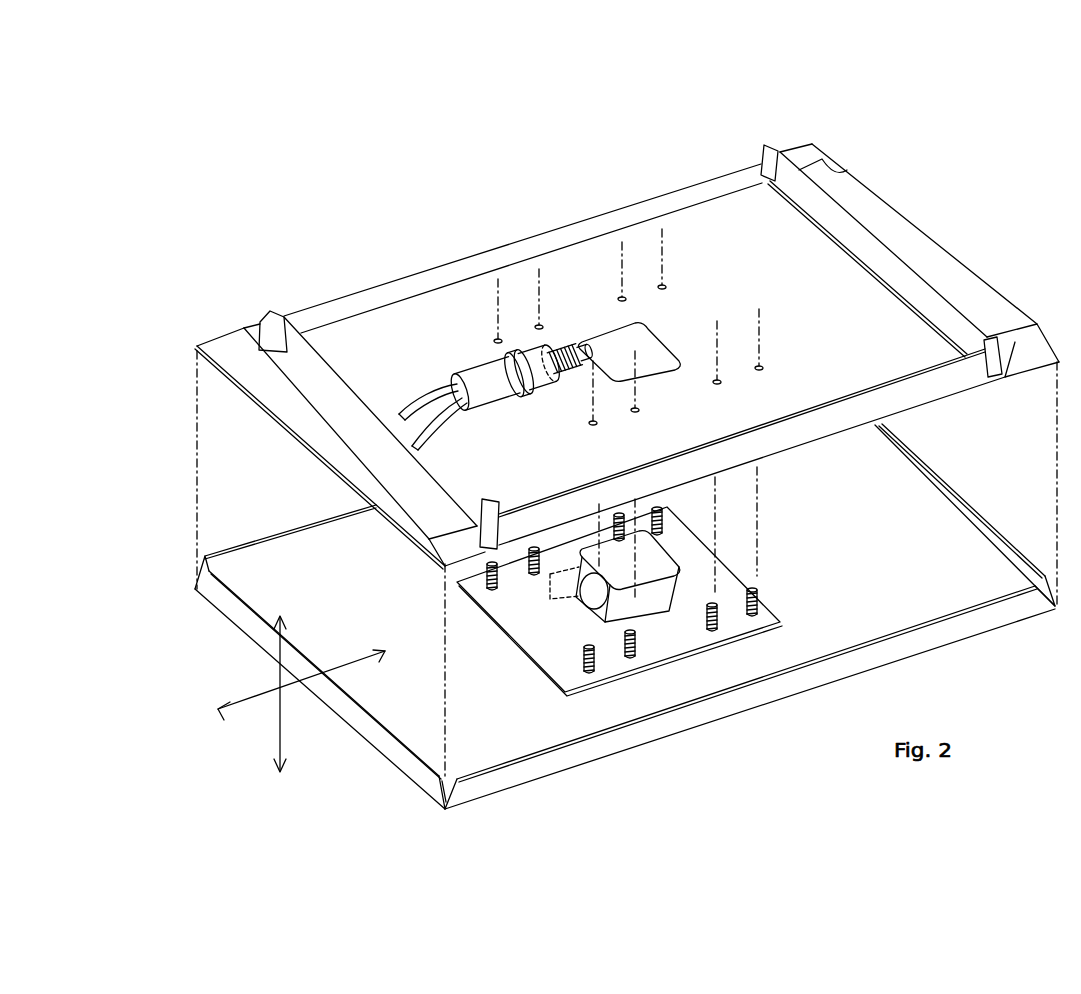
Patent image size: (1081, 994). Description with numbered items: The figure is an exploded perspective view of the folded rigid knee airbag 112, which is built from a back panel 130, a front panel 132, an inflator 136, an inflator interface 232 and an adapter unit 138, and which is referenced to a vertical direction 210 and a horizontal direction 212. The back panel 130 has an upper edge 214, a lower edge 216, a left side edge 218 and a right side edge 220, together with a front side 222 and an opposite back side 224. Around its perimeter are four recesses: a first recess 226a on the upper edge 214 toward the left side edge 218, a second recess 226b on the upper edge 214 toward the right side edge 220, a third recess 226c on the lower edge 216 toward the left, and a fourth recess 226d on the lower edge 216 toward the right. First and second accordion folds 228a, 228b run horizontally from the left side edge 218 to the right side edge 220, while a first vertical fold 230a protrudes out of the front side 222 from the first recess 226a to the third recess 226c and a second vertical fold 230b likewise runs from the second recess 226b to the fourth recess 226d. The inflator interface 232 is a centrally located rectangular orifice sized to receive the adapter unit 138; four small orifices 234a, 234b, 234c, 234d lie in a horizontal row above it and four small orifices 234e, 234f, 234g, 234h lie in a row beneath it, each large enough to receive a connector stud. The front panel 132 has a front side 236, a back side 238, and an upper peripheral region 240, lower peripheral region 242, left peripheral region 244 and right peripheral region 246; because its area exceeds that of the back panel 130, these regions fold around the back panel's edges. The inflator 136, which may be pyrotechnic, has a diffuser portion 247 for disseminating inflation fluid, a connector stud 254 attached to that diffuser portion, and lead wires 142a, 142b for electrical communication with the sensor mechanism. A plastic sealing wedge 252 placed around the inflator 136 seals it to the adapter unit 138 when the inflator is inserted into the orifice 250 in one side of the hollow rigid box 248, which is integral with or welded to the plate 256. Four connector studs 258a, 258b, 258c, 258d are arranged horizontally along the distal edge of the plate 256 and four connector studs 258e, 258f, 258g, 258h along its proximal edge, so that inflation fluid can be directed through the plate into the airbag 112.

The folded rigid knee airbag 112 is at (262, 205).
The back panel 130 is at (217, 338).
The front panel 132 is at (500, 745).
The inflator 136 is at (508, 352).
The adapter unit 138 is at (441, 550).
The lead wire 142a is at (417, 400).
The lead wire 142b is at (440, 422).
The vertical direction 210 is at (275, 645).
The horizontal direction 212 is at (235, 697).
The upper edge 214 is at (690, 186).
The lower edge 216 is at (823, 443).
The left side edge 218 is at (287, 413).
The right side edge 220 is at (947, 266).
The front side 222 is at (563, 202).
The back side 224 is at (786, 470).
The first recess 226a is at (250, 336).
The second recess 226b is at (757, 160).
The third recess 226c is at (500, 540).
The fourth recess 226d is at (1000, 388).
The first accordion fold 228a is at (843, 173).
The second accordion fold 228b is at (1013, 343).
The first vertical fold 230a is at (313, 352).
The second vertical fold 230b is at (888, 258).
The inflator interface 232 is at (647, 340).
The small orifice 234a is at (493, 340).
The small orifice 234b is at (541, 328).
The small orifice 234c is at (619, 299).
The small orifice 234d is at (661, 287).
The small orifice 234e is at (592, 427).
The small orifice 234f is at (633, 413).
The small orifice 234g is at (716, 385).
The small orifice 234h is at (759, 370).
The front side 236 is at (270, 528).
The back side 238 is at (722, 738).
The upper peripheral region 240 is at (335, 518).
The lower peripheral region 242 is at (913, 643).
The left peripheral region 244 is at (367, 735).
The right peripheral region 246 is at (967, 503).
The diffuser portion 247 is at (538, 386).
The hollow rigid box 248 is at (652, 622).
The orifice 250 is at (592, 608).
The sealing wedge 252 is at (487, 360).
The connector stud 254 is at (568, 371).
The plate 256 is at (727, 582).
The connector stud 258a is at (497, 587).
The connector stud 258b is at (530, 580).
The connector stud 258c is at (618, 517).
The connector stud 258d is at (661, 522).
The connector stud 258e is at (590, 660).
The connector stud 258f is at (635, 652).
The connector stud 258g is at (718, 625).
The connector stud 258h is at (756, 612).